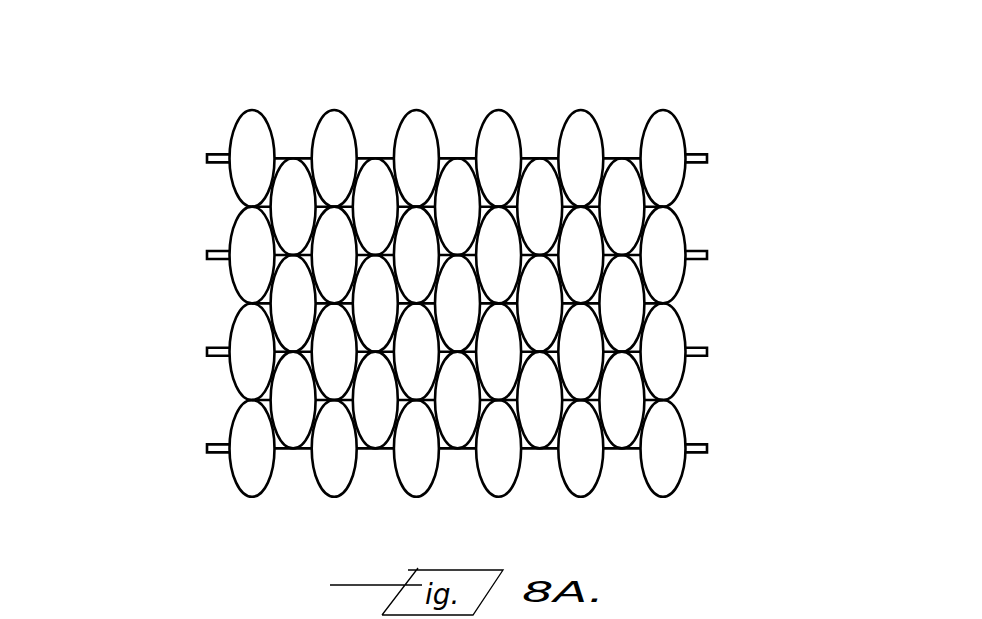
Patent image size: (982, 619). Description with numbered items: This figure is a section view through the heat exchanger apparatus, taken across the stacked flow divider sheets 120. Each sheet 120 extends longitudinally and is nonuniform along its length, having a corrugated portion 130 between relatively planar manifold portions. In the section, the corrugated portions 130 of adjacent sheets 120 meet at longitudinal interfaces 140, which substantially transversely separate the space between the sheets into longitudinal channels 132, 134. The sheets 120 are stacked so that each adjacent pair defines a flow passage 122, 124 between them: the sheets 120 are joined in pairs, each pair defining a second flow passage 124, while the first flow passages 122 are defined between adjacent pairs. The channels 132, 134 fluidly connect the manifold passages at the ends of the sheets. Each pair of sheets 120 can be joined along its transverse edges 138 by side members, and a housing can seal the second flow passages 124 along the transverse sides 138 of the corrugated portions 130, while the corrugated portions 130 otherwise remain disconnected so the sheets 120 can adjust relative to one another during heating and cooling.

The corrugated portion 130 is at (390, 93).
The flow divider sheet 120 is at (683, 128).
The first flow passage 122 is at (248, 132).
The longitudinal channel 132 is at (328, 137).
The second flow passage 124 is at (287, 206).
The longitudinal channel 134 is at (377, 215).
The transverse edge 138 is at (217, 153).
The longitudinal interface 140 is at (523, 156).